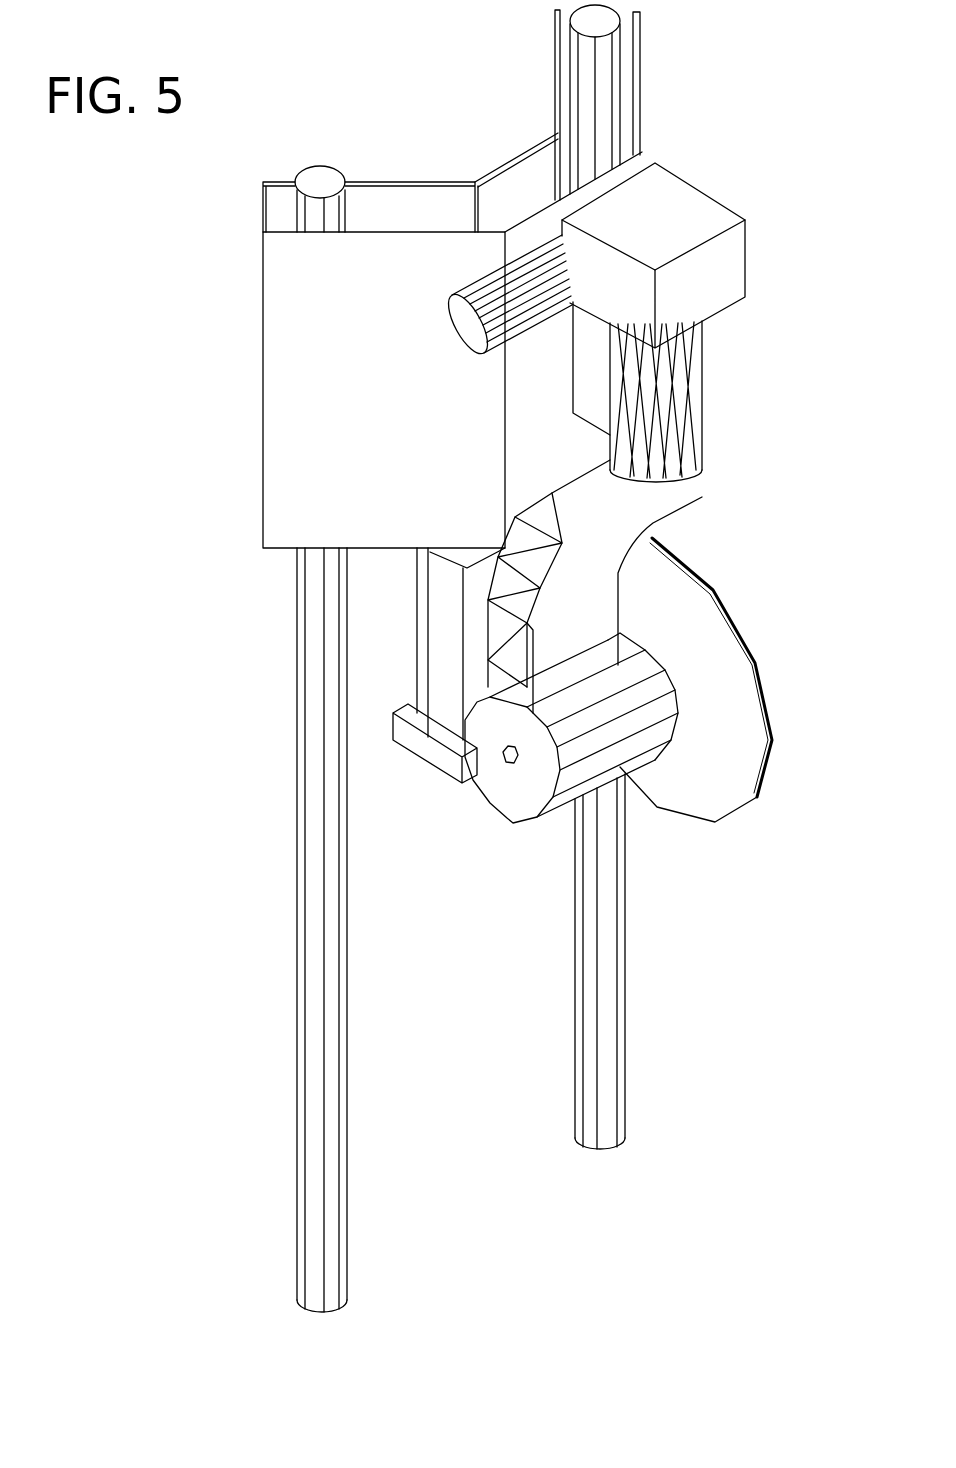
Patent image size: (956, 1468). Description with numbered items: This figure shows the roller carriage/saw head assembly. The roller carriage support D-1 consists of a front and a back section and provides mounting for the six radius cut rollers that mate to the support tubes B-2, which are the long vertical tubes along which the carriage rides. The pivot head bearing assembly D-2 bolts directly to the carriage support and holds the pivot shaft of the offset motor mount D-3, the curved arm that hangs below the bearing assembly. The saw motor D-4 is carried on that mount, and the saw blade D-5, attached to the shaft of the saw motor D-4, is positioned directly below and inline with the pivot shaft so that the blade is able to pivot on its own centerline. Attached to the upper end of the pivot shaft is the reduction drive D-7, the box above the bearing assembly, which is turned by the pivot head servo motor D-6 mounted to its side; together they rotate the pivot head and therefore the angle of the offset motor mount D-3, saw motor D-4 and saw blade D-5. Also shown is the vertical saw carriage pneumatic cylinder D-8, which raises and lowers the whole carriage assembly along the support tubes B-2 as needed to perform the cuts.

The roller carriage support D-1 is at (388, 372).
The pivot head bearing assembly D-2 is at (593, 368).
The offset motor mount D-3 is at (577, 612).
The saw motor D-4 is at (513, 785).
The saw blade D-5 is at (712, 747).
The pivot head servo motor D-6 is at (510, 293).
The reduction drive D-7 is at (663, 222).
The vertical saw carriage pneumatic cylinder D-8 is at (448, 650).
The support tubes B-2 is at (322, 1215).